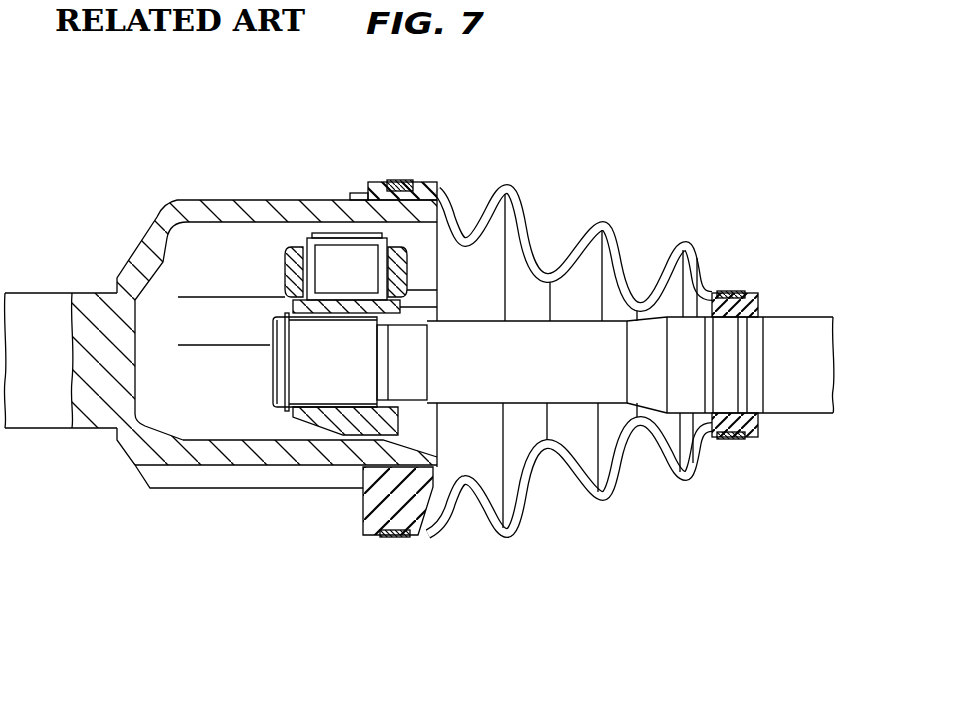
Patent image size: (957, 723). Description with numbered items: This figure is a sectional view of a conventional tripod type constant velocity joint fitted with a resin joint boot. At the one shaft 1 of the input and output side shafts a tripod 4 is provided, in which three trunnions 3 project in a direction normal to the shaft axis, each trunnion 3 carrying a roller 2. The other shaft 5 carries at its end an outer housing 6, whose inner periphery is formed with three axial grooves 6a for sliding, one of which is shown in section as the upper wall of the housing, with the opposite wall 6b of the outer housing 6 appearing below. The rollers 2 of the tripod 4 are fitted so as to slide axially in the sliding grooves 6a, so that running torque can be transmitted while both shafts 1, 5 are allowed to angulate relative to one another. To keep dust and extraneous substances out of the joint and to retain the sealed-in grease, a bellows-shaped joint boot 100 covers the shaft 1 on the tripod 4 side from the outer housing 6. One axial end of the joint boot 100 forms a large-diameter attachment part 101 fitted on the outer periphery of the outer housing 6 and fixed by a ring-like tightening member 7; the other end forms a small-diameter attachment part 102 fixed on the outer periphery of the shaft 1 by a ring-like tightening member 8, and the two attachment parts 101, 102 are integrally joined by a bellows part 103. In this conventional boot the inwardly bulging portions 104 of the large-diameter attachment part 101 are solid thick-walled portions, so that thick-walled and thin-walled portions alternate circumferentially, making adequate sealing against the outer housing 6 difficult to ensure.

The shaft 1 is at (797, 408).
The roller 2 is at (297, 266).
The trunnion 3 is at (335, 262).
The tripod 4 is at (272, 417).
The shaft 5 is at (53, 410).
The outer housing 6 is at (185, 201).
The axial groove 6a is at (235, 231).
The lower wall of outer joint member 6b is at (300, 468).
The tightening member 7 is at (402, 179).
The tightening member 8 is at (733, 291).
The joint boot 100 is at (599, 203).
The large-diameter attachment part 101 is at (428, 205).
The small-diameter attachment part 102 is at (758, 296).
The bellows part 103 is at (587, 493).
The inwardly bulging portion 104 is at (362, 497).